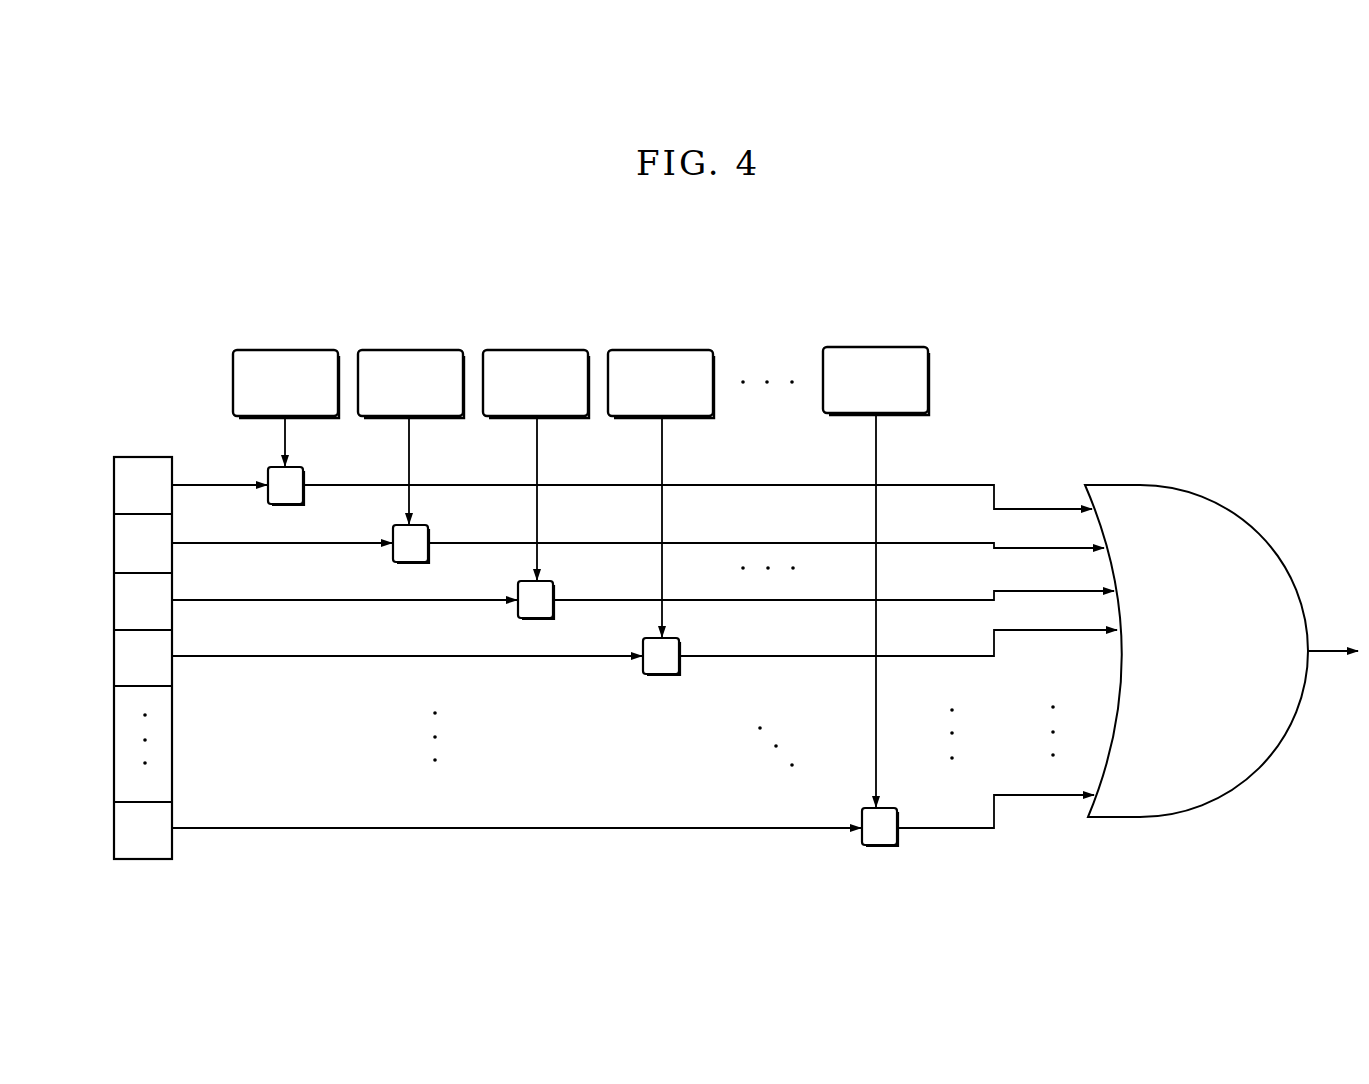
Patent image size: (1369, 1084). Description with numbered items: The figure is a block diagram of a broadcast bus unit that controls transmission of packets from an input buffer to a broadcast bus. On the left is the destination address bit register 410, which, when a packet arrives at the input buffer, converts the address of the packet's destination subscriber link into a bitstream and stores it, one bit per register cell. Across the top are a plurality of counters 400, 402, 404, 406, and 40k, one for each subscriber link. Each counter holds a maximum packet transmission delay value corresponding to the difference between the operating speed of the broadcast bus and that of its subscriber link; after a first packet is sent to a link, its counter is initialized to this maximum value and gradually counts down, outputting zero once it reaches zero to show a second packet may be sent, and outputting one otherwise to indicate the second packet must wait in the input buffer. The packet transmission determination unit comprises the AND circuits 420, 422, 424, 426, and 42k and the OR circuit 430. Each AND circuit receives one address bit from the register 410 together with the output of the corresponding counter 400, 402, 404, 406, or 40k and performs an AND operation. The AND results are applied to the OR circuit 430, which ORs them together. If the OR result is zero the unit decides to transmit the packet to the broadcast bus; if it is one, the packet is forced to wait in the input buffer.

The counter 400 is at (256, 350).
The counter 402 is at (381, 350).
The counter 404 is at (507, 350).
The counter 406 is at (632, 350).
The counter 40k is at (847, 348).
The destination address bit register 410 is at (114, 658).
The AND circuit 420 is at (304, 500).
The AND circuit 422 is at (429, 557).
The AND circuit 424 is at (554, 614).
The AND circuit 426 is at (681, 670).
The AND circuit 42k is at (898, 842).
The OR circuit 430 is at (1130, 485).